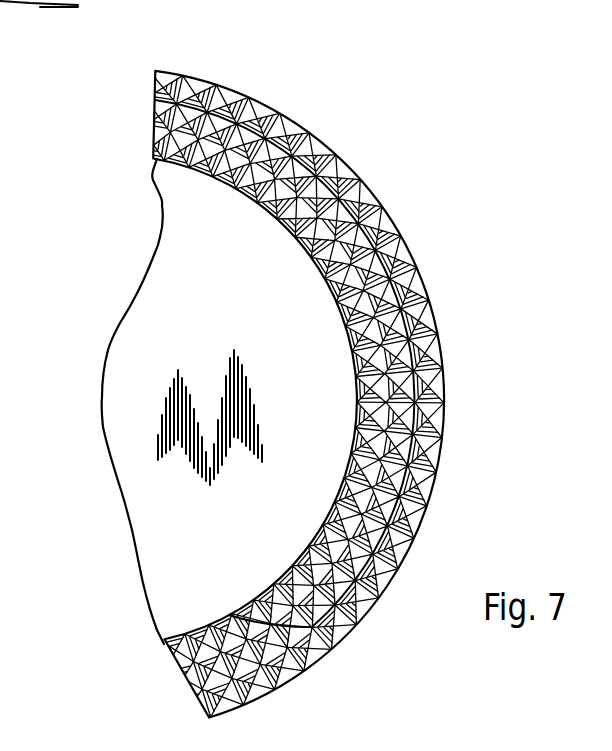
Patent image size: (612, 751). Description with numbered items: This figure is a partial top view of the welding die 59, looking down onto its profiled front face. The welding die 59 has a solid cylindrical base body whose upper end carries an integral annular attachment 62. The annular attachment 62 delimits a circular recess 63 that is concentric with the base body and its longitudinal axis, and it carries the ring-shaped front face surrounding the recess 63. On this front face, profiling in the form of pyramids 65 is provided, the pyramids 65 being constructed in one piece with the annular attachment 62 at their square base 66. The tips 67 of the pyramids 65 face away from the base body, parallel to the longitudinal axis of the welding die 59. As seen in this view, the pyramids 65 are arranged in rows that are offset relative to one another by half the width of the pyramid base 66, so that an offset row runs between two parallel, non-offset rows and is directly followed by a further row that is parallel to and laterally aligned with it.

The welding die 59 is at (272, 100).
The annular attachment 62 is at (225, 363).
The circular recess 63 is at (150, 313).
The pyramids 65 is at (275, 400).
The square base 66 is at (290, 400).
The tips 67 is at (224, 400).